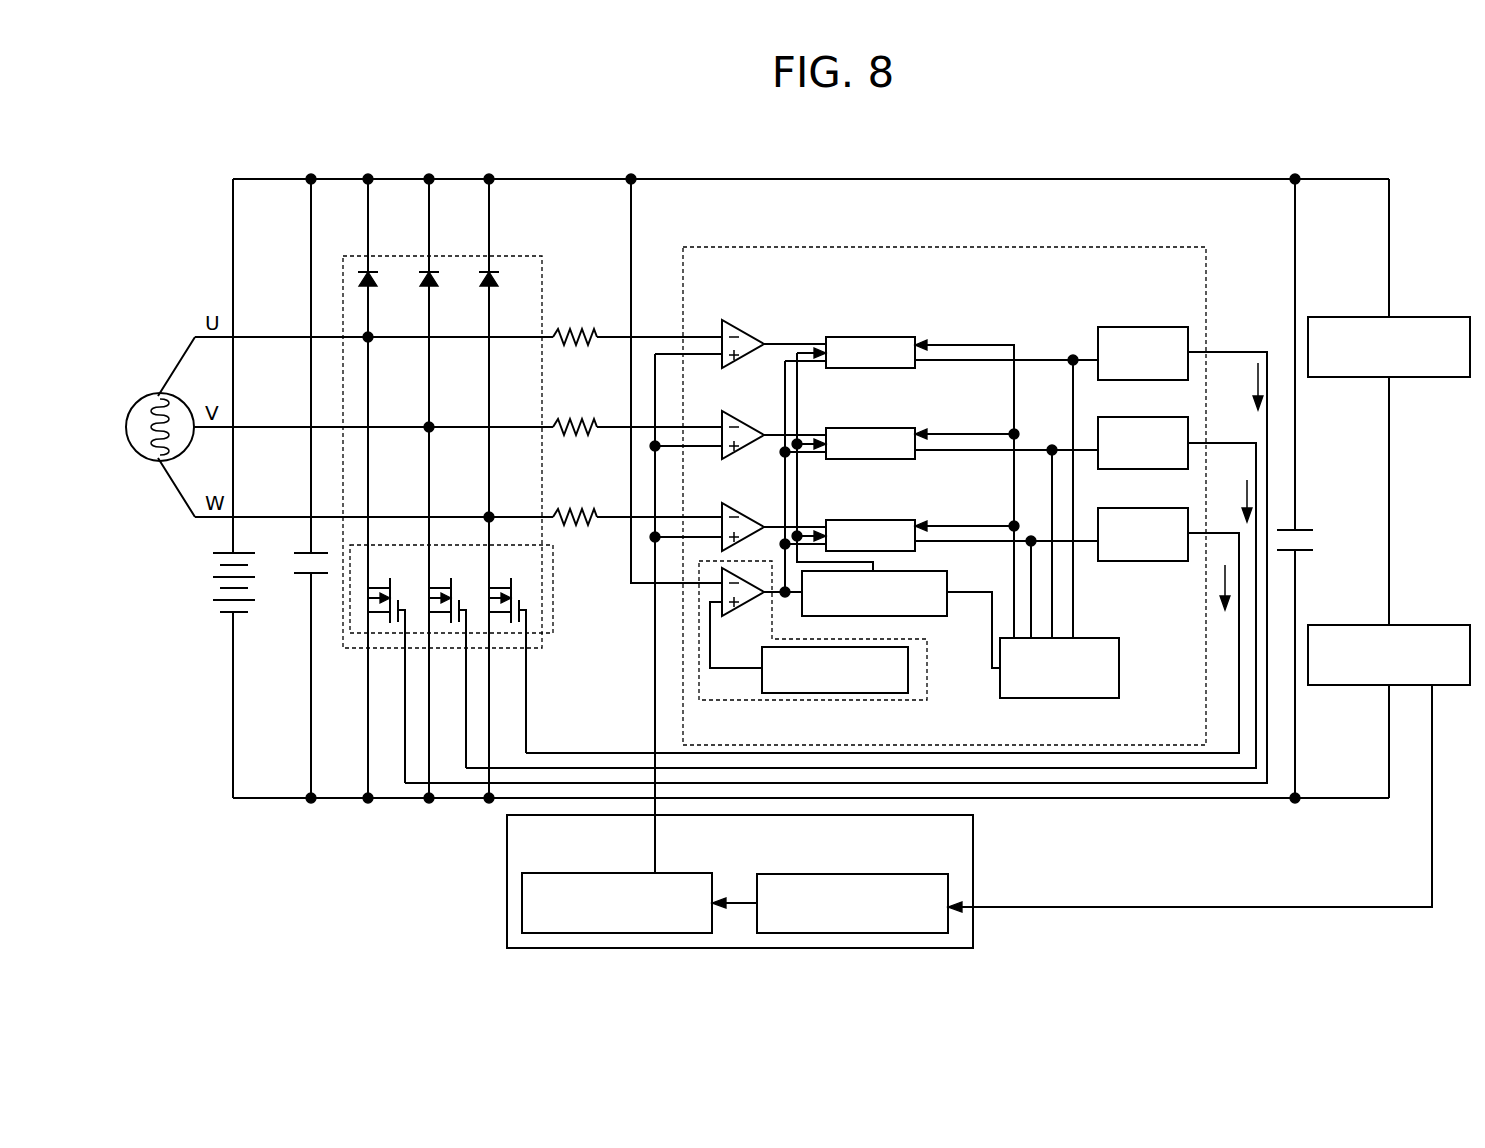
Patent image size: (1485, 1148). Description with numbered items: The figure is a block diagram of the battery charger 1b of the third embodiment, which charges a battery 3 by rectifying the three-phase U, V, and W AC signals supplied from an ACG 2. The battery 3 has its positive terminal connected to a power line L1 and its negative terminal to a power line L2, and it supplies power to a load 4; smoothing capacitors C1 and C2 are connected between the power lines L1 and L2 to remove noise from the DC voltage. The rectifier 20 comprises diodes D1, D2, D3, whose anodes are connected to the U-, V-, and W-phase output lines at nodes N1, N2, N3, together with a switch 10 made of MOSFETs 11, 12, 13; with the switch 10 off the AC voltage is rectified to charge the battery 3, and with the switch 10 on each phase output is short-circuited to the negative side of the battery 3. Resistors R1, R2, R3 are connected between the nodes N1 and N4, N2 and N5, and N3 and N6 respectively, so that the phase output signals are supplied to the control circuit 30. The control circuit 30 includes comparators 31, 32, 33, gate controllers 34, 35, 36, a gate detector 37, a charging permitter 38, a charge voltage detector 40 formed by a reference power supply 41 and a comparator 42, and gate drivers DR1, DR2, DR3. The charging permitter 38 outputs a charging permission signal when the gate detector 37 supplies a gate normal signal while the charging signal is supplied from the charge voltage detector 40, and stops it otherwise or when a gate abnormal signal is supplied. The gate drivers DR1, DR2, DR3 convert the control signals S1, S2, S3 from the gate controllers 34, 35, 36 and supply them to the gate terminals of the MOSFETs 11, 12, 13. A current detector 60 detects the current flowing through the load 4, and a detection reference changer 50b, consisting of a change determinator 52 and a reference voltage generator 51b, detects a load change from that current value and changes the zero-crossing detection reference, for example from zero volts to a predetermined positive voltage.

The battery charger 1b is at (1018, 140).
The ACG 2 is at (134, 396).
The battery 3 is at (213, 572).
The load 4 is at (1416, 317).
The switch 10 is at (553, 560).
The MOSFET 11 is at (401, 599).
The MOSFET 12 is at (462, 599).
The MOSFET 13 is at (522, 599).
The rectifier 20 is at (343, 648).
The control circuit 30 is at (917, 247).
The comparator 31 is at (748, 332).
The comparator 32 is at (748, 422).
The comparator 33 is at (748, 514).
The gate controller 34 is at (876, 337).
The gate controller 35 is at (876, 428).
The gate controller 36 is at (876, 520).
The gate detector 37 is at (1119, 672).
The charging permitter 38 is at (950, 585).
The charge voltage detector 40 is at (908, 700).
The reference power supply 41 is at (843, 700).
The comparator 42 is at (752, 608).
The detection reference changer 50b is at (975, 848).
The reference voltage generator 51b is at (626, 873).
The change determinator 52 is at (770, 874).
The current detector 60 is at (1420, 625).
The diode D1 is at (376, 287).
The diode D2 is at (437, 287).
The diode D3 is at (497, 287).
The node N1 is at (372, 342).
The node N2 is at (433, 432).
The node N3 is at (492, 510).
The node N4 is at (636, 334).
The node N5 is at (688, 426).
The node N6 is at (688, 516).
The resistor R1 is at (574, 336).
The resistor R2 is at (574, 426).
The resistor R3 is at (574, 516).
The capacitor C1 is at (304, 576).
The capacitor C2 is at (1306, 530).
The power line L1 is at (549, 178).
The power line L2 is at (229, 746).
The gate driver DR1 is at (1114, 327).
The gate driver DR2 is at (1114, 417).
The gate driver DR3 is at (1114, 508).
The control signal S1 is at (1242, 386).
The control signal S2 is at (1244, 484).
The control signal S3 is at (1220, 573).